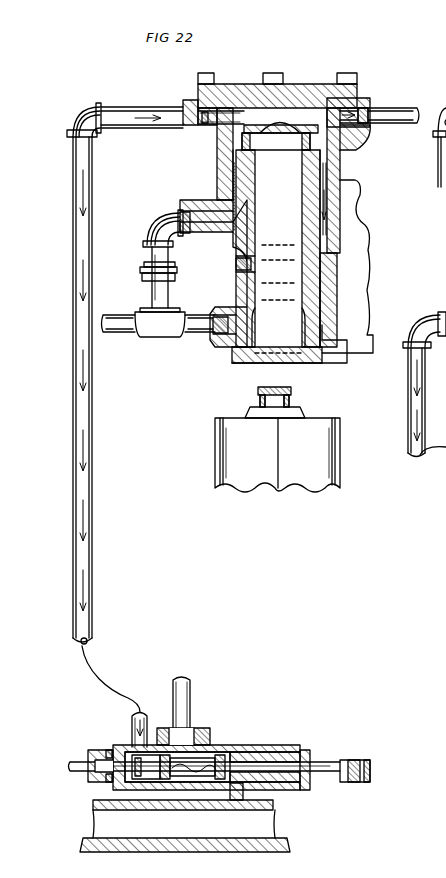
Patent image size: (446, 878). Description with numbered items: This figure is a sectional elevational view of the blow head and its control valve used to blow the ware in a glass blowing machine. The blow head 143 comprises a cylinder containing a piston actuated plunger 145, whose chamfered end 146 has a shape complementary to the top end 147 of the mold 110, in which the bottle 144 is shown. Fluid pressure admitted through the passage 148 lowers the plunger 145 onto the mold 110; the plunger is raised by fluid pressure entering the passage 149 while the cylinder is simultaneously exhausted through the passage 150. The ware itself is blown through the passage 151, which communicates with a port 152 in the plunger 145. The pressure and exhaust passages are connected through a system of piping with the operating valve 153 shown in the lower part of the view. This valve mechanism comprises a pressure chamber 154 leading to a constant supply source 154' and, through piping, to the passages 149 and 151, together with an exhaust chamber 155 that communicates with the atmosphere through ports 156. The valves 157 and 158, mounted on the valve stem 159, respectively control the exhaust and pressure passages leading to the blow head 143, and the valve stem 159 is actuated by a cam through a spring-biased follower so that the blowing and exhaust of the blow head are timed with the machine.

The mold 110 is at (340, 470).
The blow head 143 is at (345, 178).
The bottle 144 is at (260, 395).
The piston actuated plunger 145 is at (310, 330).
The chamfered end 146 is at (298, 363).
The top end of mold 147 is at (302, 415).
The passage 148 is at (348, 111).
The passage 149 is at (176, 213).
The passage 150 is at (185, 95).
The passage 151 is at (225, 348).
The port 152 is at (235, 268).
The operating valve 153 is at (248, 745).
The pressure chamber 154 is at (205, 752).
The constant supply source 154' is at (185, 830).
The exhaust chamber 155 is at (122, 745).
The ports 156 is at (105, 750).
The valve 157 is at (105, 784).
The valve 158 is at (216, 745).
The valve stem 159 is at (330, 771).